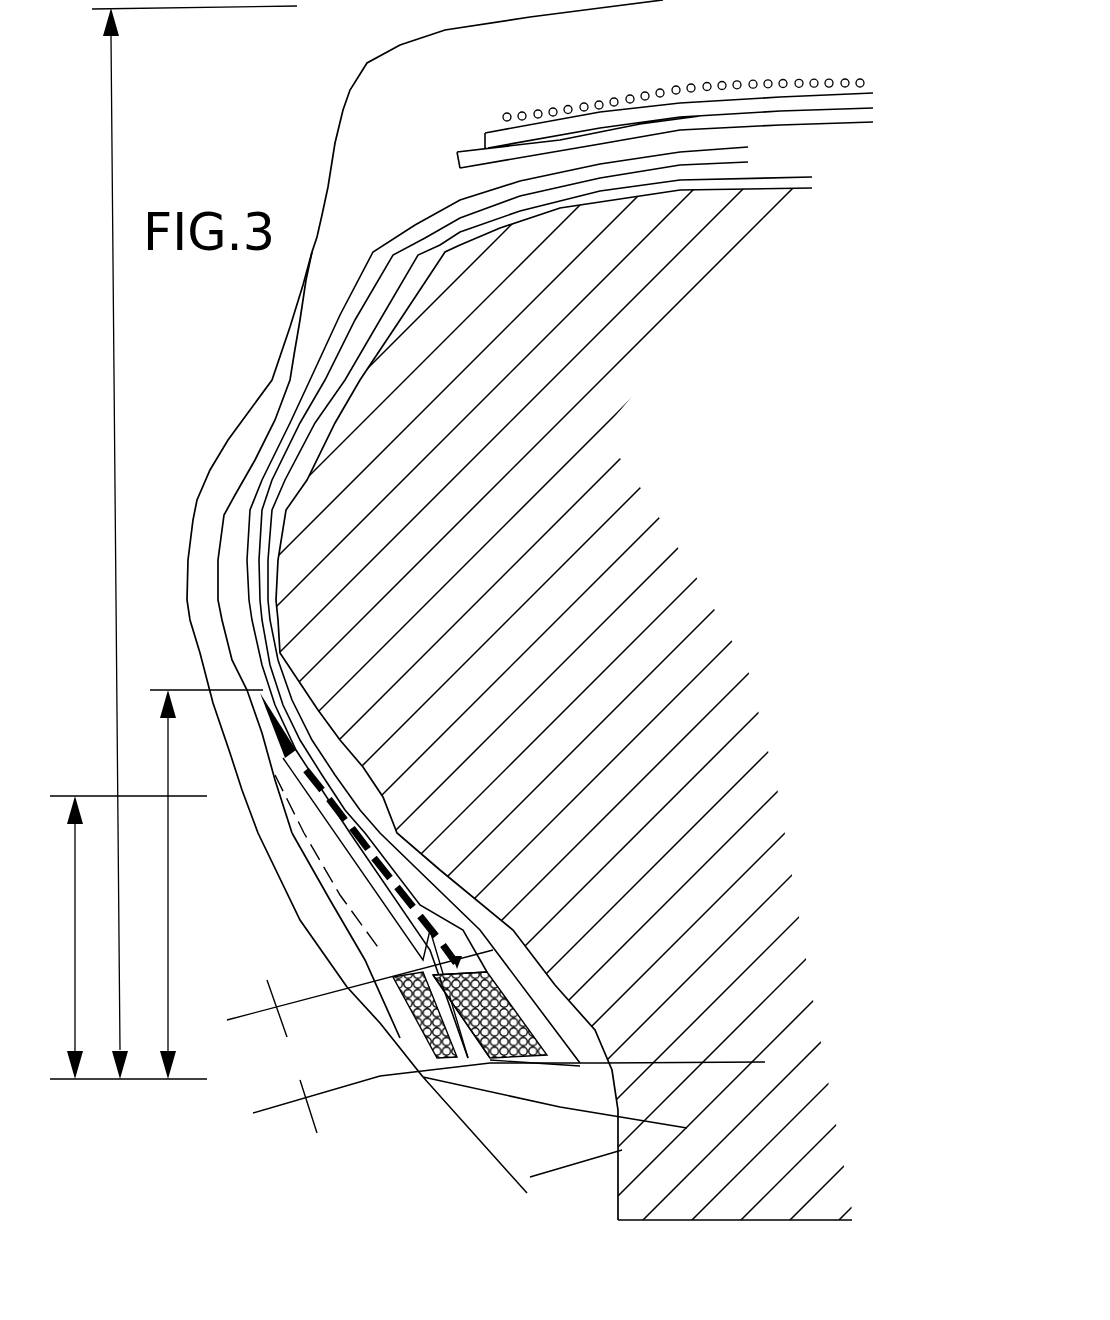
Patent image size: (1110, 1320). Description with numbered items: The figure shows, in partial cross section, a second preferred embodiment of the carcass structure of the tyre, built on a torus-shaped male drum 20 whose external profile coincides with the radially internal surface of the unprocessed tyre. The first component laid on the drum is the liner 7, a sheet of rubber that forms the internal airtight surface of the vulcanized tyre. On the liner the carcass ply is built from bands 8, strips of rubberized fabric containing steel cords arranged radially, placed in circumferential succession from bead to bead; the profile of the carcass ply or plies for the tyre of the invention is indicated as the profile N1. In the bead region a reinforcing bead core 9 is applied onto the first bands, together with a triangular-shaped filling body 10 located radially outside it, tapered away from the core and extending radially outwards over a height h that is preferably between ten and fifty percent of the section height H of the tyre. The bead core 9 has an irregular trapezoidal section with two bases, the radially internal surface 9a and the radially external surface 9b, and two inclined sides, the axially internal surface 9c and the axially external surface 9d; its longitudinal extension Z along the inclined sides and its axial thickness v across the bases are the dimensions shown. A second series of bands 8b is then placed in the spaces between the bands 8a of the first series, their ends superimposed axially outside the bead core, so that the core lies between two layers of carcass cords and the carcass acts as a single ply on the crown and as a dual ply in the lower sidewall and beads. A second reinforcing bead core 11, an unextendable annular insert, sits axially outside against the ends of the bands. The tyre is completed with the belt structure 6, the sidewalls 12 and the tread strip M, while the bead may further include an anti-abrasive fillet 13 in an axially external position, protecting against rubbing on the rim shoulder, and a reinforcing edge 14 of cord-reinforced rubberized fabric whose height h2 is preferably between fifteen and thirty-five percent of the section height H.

The belt structure 6 is at (456, 177).
The tread strip M is at (683, 78).
The bands 8 is at (426, 226).
The bands of the first series 8a is at (373, 843).
The bands of the second series 8b is at (445, 873).
The filling body 10 is at (465, 903).
The sidewalls 12 is at (228, 440).
The anti-abrasive fillet 13 is at (353, 957).
The reinforcing edge 14 is at (360, 920).
The male drum 20 is at (598, 603).
The reinforcing bead core 9 is at (525, 1045).
The radially internal surface 9a is at (520, 1070).
The radially external surface 9b is at (527, 935).
The axially internal surface 9c is at (505, 993).
The axially external surface 9d is at (437, 1058).
The second reinforcing bead core 11 is at (405, 1055).
The liner 7 is at (663, 1000).
The profile of the carcass ply N1 is at (531, 1071).
The extension of the bead core Z is at (360, 1041).
The axial thickness of the bead core v is at (622, 1133).
The height of the section H is at (173, 542).
The radial height of the filling body h is at (201, 884).
The height of the reinforcing edge h2 is at (128, 937).